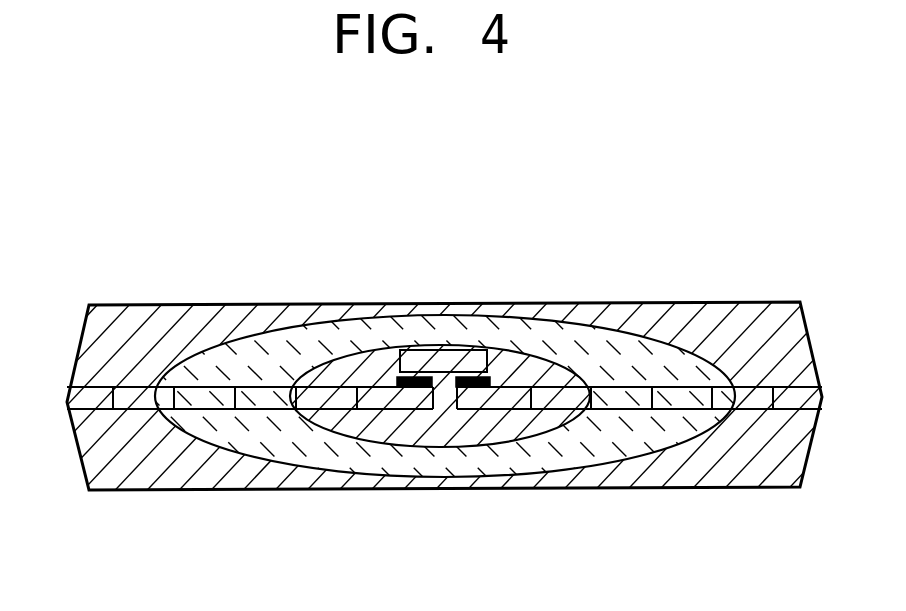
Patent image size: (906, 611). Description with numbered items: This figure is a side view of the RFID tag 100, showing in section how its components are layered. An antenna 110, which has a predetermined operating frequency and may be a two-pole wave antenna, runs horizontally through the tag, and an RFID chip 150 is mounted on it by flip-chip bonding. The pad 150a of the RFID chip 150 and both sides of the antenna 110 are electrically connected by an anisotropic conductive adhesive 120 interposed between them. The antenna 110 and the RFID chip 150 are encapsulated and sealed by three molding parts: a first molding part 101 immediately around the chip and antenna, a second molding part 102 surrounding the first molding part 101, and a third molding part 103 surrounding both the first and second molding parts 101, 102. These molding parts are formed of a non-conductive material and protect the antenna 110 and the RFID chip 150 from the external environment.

The RFID tag 100 is at (86, 262).
The first molding part 101 is at (495, 432).
The second molding part 102 is at (573, 447).
The third molding part 103 is at (680, 472).
The antenna 110 is at (266, 387).
The anisotropic conductive adhesive 120 is at (494, 373).
The RFID chip 150 is at (452, 350).
The pad 150a is at (398, 377).